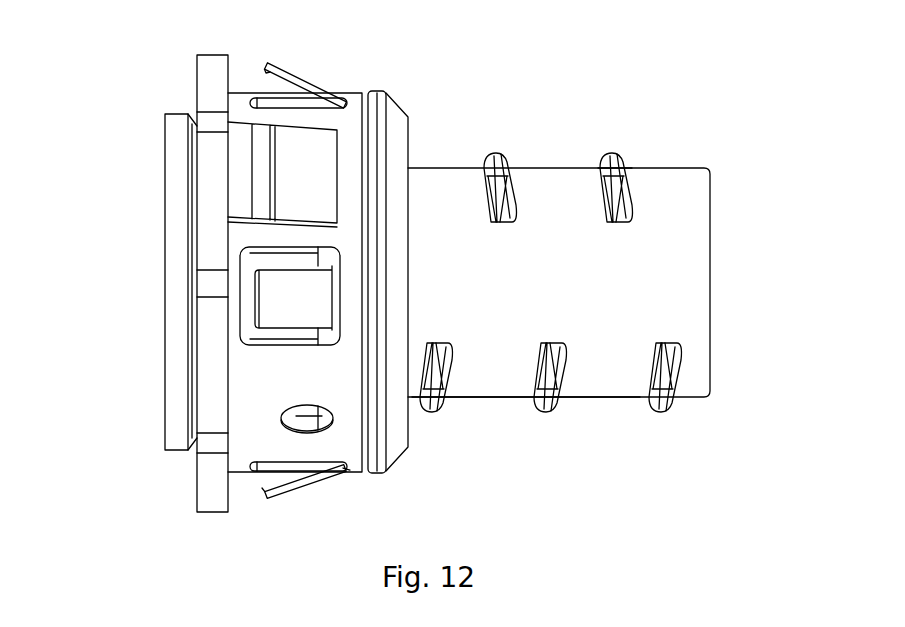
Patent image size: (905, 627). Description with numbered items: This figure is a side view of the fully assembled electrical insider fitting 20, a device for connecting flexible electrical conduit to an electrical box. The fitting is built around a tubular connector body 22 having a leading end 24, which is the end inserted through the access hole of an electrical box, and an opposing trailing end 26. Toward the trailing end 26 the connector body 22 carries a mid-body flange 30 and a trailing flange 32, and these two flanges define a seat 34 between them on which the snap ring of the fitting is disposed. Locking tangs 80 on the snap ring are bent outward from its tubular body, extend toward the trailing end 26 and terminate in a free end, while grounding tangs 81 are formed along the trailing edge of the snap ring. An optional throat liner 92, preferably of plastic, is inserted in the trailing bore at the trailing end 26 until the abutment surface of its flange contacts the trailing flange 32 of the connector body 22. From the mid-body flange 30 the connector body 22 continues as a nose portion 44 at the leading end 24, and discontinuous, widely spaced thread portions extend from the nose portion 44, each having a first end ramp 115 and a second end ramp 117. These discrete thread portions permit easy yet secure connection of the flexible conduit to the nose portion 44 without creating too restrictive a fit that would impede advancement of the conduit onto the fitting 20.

The electrical insider fitting 20 is at (82, 106).
The tubular connector body 22 is at (610, 397).
The leading end 24 is at (710, 282).
The trailing end 26 is at (197, 236).
The mid-body flange 30 is at (378, 475).
The trailing flange 32 is at (213, 512).
The seat 34 is at (300, 417).
The nose portion 44 is at (572, 288).
The locking tangs 80 is at (297, 488).
The grounding tangs 81 is at (315, 184).
The throat liner 92 is at (165, 395).
The first end ramp 115 is at (615, 210).
The second end ramp 117 is at (547, 353).